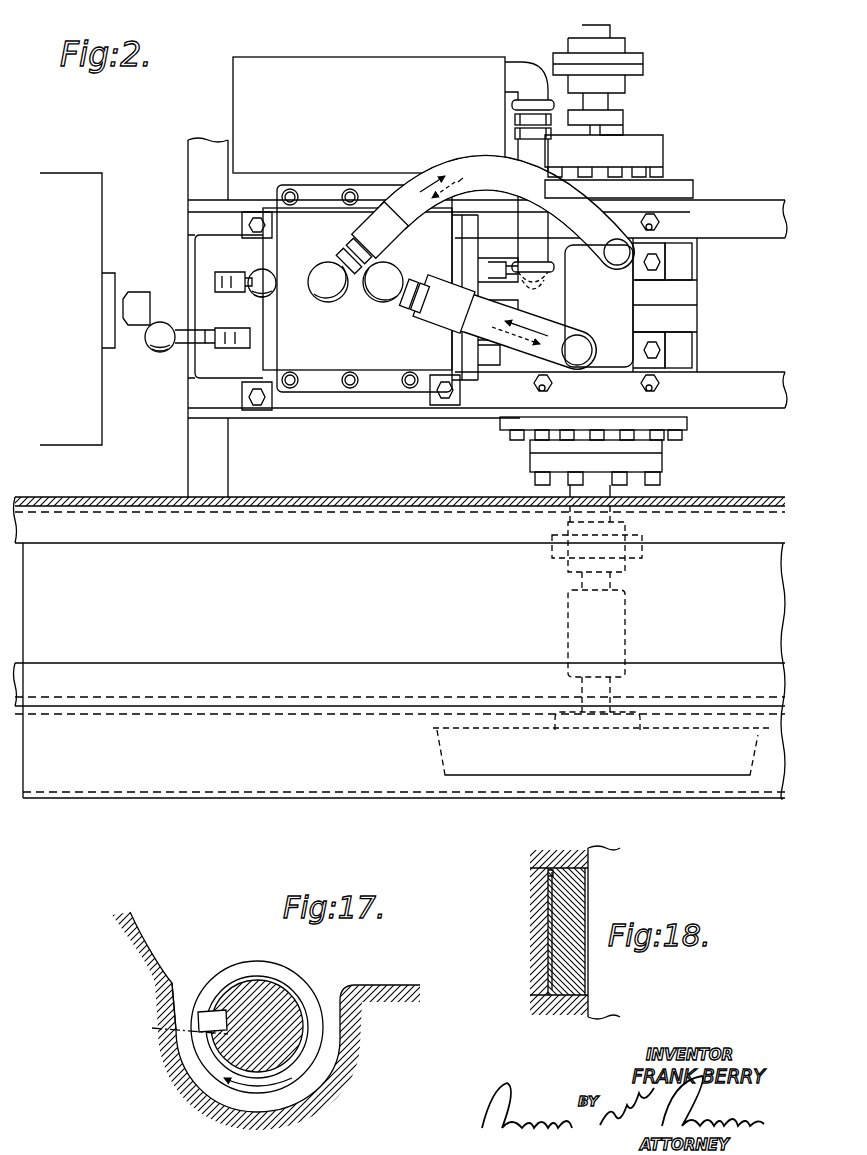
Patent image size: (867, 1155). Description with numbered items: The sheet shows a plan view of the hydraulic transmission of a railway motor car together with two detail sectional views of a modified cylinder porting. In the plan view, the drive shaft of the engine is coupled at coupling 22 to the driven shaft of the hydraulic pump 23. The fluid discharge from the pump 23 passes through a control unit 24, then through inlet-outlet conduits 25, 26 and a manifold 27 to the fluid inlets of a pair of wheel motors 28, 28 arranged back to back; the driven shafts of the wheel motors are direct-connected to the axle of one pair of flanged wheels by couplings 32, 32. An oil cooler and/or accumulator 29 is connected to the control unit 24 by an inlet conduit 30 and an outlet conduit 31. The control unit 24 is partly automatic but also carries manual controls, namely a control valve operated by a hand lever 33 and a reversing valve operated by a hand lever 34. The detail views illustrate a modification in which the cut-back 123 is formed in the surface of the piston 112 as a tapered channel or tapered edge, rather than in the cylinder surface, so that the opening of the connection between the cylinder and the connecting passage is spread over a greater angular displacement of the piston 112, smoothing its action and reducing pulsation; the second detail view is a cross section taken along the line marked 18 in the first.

In FIG. 2, the coupling 22 is at (133, 300).
In FIG. 2, the hydraulic pump 23 is at (215, 375).
In FIG. 2, the control unit 24 is at (321, 210).
In FIG. 2, the inlet-outlet conduit 25 is at (562, 338).
In FIG. 2, the inlet-outlet conduit 26 is at (471, 160).
In FIG. 2, the manifold 27 is at (608, 298).
In FIG. 2, the wheel motor 28 is at (686, 260).
In FIG. 2, the oil cooler and/or accumulator 29 is at (345, 60).
In FIG. 2, the inlet conduit 30 is at (524, 76).
In FIG. 2, the outlet conduit 31 is at (470, 272).
In FIG. 2, the coupling 32 is at (640, 58).
In FIG. 2, the hand lever 33 is at (161, 353).
In FIG. 2, the hand lever 34 is at (273, 293).
In FIG. 17, the piston 112 is at (186, 1003).
In FIG. 18, the piston 112 is at (563, 944).
In FIG. 17, the cut-back 123 is at (170, 1030).
In FIG. 18, the cut-back 123 is at (548, 877).
In FIG. 17, the section line 18 is at (132, 1007).